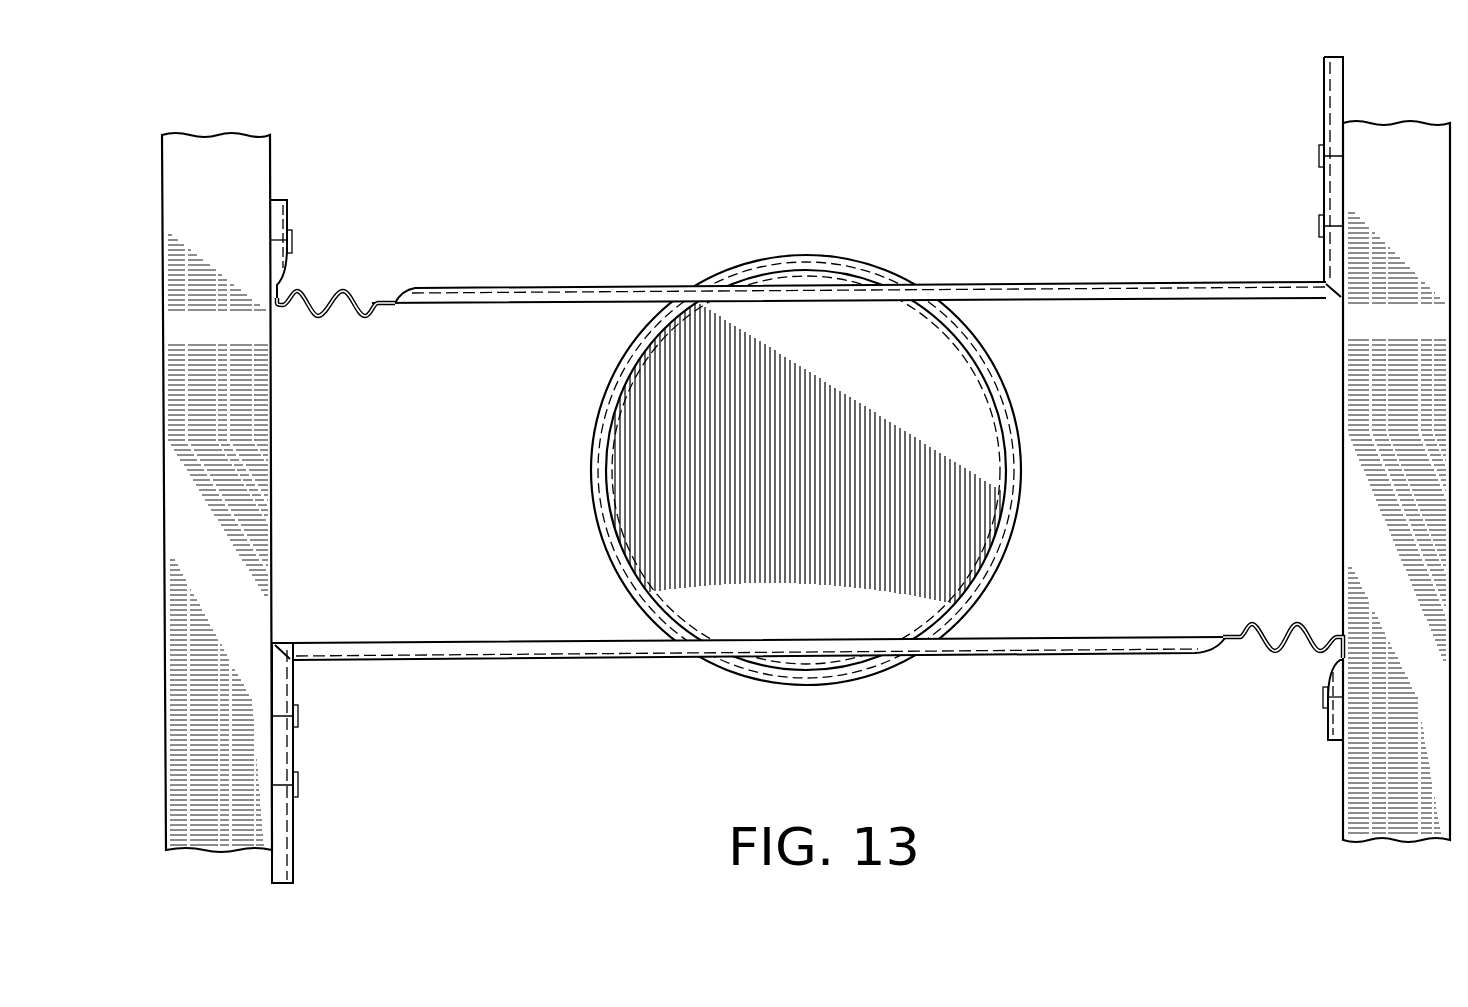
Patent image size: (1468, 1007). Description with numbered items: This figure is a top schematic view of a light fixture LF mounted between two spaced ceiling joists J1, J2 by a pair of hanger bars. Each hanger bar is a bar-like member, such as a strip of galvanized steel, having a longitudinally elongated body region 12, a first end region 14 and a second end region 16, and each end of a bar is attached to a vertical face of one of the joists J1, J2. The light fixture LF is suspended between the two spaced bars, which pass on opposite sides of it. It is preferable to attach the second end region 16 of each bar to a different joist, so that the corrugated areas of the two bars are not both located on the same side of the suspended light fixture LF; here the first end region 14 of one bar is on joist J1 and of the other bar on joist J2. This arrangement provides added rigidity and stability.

The longitudinally elongated body region 12 is at (992, 266).
The first end region 14 is at (1276, 167).
The second end region 16 is at (340, 226).
The light fixture LF is at (1026, 436).
The ceiling joist J1 is at (207, 135).
The ceiling joist J2 is at (1380, 122).